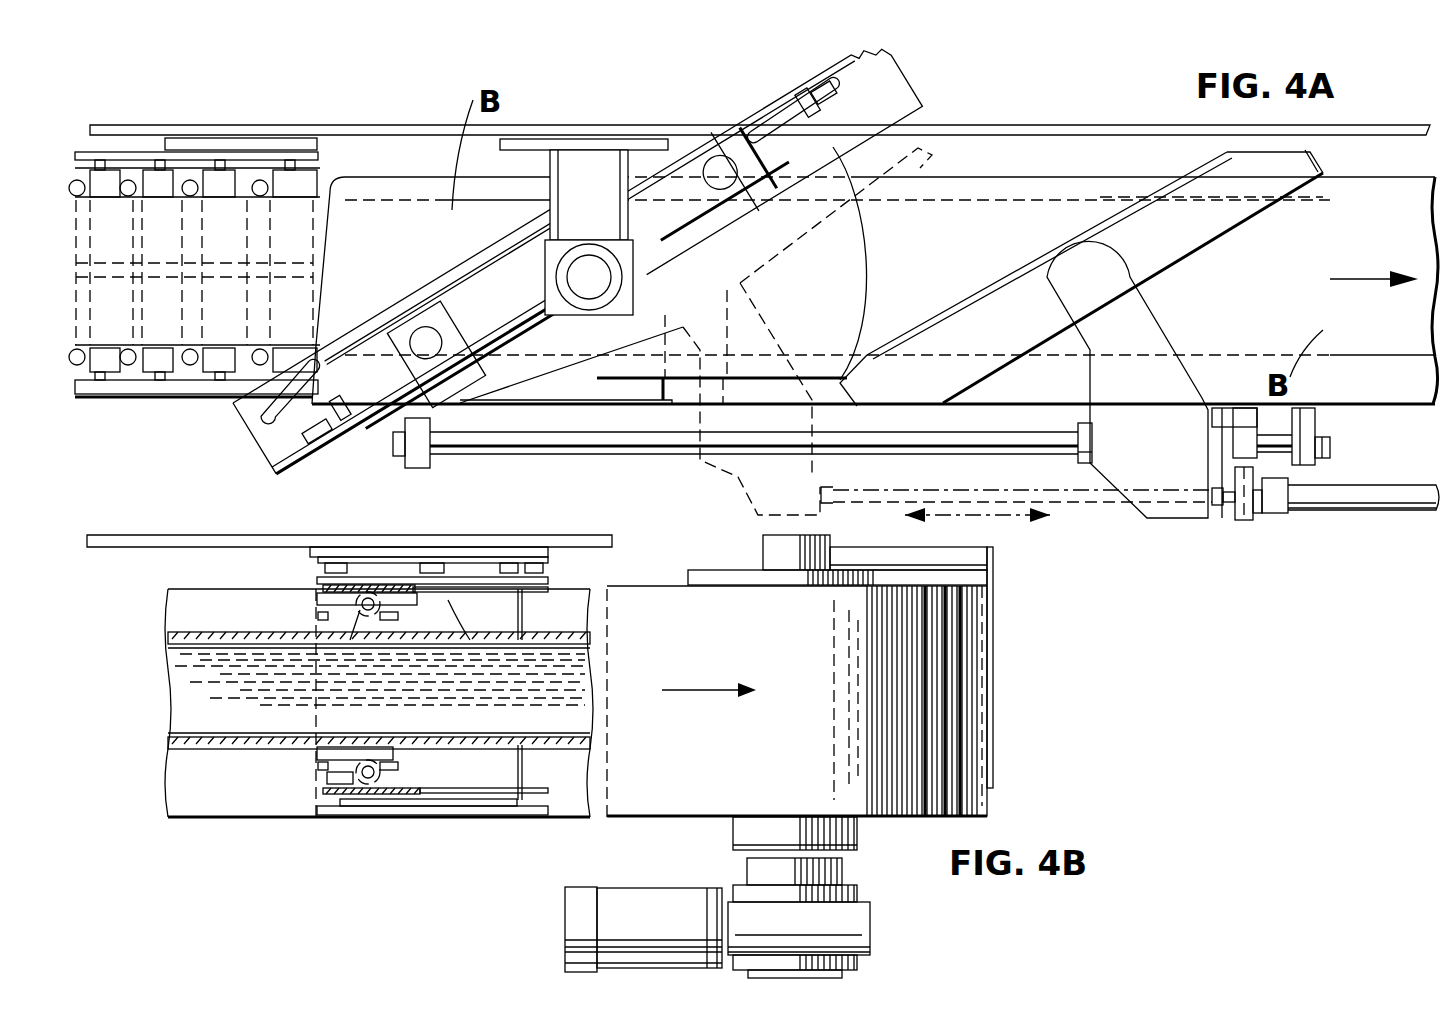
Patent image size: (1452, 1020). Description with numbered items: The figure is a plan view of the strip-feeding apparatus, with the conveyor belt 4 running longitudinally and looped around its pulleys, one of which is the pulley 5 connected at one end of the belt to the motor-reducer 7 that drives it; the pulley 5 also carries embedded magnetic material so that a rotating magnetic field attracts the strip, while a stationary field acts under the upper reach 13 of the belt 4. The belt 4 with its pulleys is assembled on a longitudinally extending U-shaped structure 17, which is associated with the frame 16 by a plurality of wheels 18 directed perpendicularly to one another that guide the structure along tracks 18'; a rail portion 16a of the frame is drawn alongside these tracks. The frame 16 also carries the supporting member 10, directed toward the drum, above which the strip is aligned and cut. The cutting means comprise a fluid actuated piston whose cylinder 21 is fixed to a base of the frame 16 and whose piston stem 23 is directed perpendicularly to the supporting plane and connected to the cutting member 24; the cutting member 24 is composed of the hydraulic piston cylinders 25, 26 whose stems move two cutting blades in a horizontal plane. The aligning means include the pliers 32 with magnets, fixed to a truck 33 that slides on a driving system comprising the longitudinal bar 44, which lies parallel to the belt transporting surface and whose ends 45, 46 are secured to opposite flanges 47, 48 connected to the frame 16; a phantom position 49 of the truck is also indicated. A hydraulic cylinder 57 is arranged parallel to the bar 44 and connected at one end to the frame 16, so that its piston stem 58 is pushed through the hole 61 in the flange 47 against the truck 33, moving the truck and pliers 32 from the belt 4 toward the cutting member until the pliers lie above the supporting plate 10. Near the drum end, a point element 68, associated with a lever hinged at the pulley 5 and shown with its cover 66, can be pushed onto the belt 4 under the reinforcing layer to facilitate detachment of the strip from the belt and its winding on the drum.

In FIG. 4B, the conveyor belt 4 is at (210, 803).
In FIG. 4B, the pulley 5 is at (687, 793).
In FIG. 4B, the motor-reducer 7 is at (597, 926).
In FIG. 4A, the supporting member 10 is at (427, 168).
In FIG. 4A, the upper reach of the belt 13 is at (1040, 186).
In FIG. 4B, the upper reach of the belt 13 is at (677, 595).
In FIG. 4A, the frame 16 is at (1137, 127).
In FIG. 4B, the frame 16 is at (205, 540).
In FIG. 4B, the rail bracket 16a is at (475, 805).
In FIG. 4B, the U-shaped structure 17 is at (190, 680).
In FIG. 4B, the wheels 18 is at (329, 810).
In FIG. 4B, the tracks 18' is at (402, 726).
In FIG. 4A, the cylinder 21 is at (607, 287).
In FIG. 4A, the piston stem 23 is at (258, 441).
In FIG. 4A, the cutting member 24 is at (440, 266).
In FIG. 4A, the hydraulic piston cylinder 25 is at (772, 122).
In FIG. 4A, the hydraulic piston cylinder 26 is at (356, 420).
In FIG. 4A, the pliers 32 is at (940, 140).
In FIG. 4A, the truck 33 is at (730, 480).
In FIG. 4A, the longitudinal bar 44 is at (992, 450).
In FIG. 4A, the end of the bar 45 is at (1330, 452).
In FIG. 4A, the end of the bar 46 is at (395, 438).
In FIG. 4A, the flange 47 is at (1302, 422).
In FIG. 4A, the flange 48 is at (412, 458).
In FIG. 4A, the phantom position 49 is at (1135, 430).
In FIG. 4A, the hydraulic cylinder 57 is at (1340, 504).
In FIG. 4A, the stem 58 is at (945, 492).
In FIG. 4A, the hole 61 is at (1256, 518).
In FIG. 4A, the cover plate 66 is at (912, 548).
In FIG. 4B, the cover plate 66 is at (837, 560).
In FIG. 4B, the point element 68 is at (995, 702).